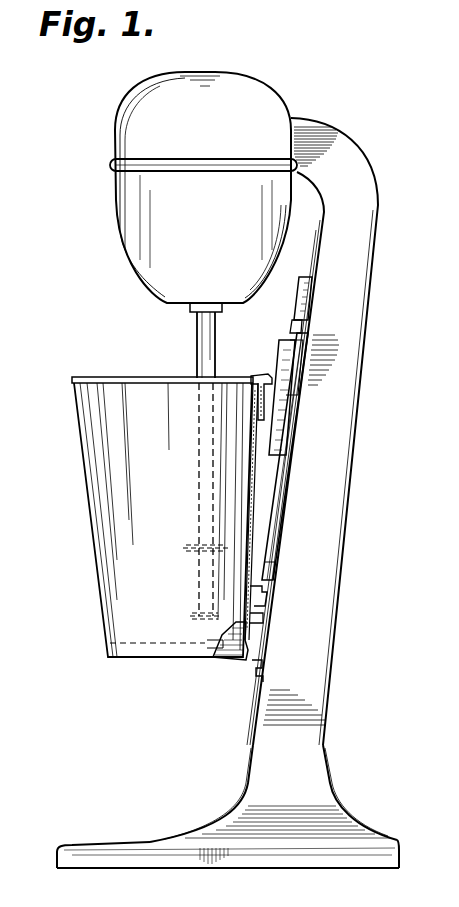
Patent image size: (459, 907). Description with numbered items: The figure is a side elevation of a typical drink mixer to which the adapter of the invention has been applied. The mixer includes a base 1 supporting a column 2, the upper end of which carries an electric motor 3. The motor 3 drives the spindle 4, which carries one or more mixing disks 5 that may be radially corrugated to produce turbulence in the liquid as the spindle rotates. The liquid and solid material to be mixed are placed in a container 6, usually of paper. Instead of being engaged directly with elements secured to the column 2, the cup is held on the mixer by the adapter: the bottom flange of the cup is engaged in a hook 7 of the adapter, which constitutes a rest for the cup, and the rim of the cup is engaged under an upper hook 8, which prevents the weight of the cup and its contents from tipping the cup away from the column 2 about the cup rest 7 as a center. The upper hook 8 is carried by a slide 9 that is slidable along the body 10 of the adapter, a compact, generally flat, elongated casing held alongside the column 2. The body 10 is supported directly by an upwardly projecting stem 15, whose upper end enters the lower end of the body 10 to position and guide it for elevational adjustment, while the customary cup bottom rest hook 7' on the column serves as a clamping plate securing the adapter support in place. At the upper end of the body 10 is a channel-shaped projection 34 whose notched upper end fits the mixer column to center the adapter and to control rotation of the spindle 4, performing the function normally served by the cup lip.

The base 1 is at (158, 842).
The column 2 is at (316, 665).
The electric motor 3 is at (140, 254).
The spindle 4 is at (200, 346).
The mixing disks 5 is at (198, 612).
The container 6 is at (103, 592).
The hook 7 is at (226, 539).
The cup bottom rest hook 7' is at (234, 666).
The upper hook 8 is at (262, 374).
The slide 9 is at (283, 398).
The body 10 is at (274, 510).
The stem 15 is at (266, 590).
The channel-shaped projection 34 is at (305, 305).